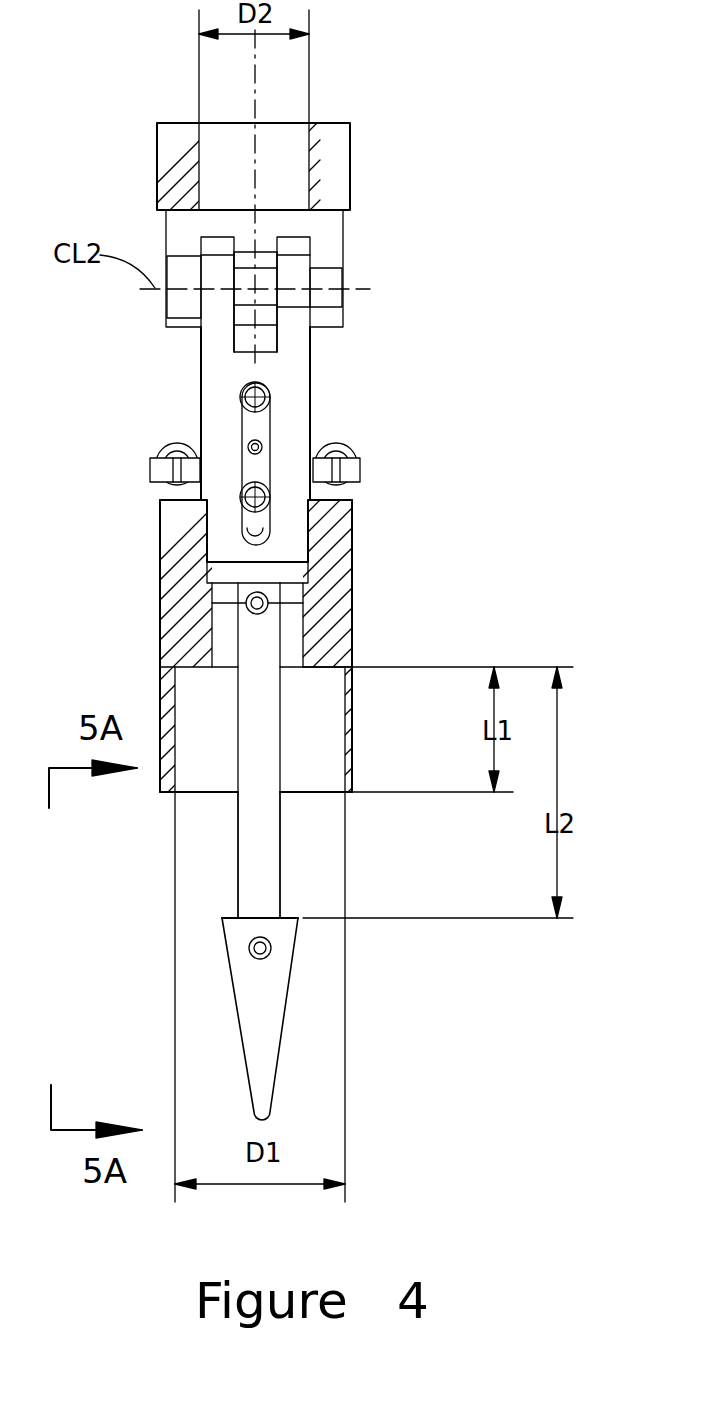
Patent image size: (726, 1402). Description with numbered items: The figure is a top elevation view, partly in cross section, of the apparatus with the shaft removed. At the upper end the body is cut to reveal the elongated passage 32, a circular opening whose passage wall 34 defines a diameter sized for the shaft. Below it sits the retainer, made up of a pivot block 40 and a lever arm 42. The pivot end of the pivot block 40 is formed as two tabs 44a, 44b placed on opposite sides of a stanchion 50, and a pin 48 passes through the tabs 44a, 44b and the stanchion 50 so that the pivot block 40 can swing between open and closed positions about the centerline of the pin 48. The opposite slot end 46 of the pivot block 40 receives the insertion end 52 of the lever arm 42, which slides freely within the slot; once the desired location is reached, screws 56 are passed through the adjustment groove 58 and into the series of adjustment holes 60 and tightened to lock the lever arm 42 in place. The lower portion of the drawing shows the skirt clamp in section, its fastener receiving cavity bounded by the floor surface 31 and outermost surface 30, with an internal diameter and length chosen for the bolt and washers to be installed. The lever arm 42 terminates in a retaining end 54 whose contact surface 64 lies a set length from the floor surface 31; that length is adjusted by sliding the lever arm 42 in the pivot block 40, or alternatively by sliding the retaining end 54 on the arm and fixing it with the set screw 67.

The outermost surface 30 is at (345, 793).
The floor surface 31 is at (305, 667).
The elongated passage 32 is at (283, 152).
The passage wall 34 is at (318, 180).
The pivot block 40 is at (288, 357).
The lever arm 42 is at (270, 835).
The tab 44a is at (288, 322).
The tab 44b is at (222, 322).
The slot end 46 is at (215, 565).
The pin 48 is at (330, 295).
The stanchion 50 is at (262, 252).
The insertion end 52 is at (265, 632).
The retaining end 54 is at (267, 1030).
The screws 56 is at (273, 404).
The adjustment groove 58 is at (267, 458).
The adjustment holes 60 is at (270, 602).
The contact surface 64 is at (283, 916).
The set screw 67 is at (273, 948).